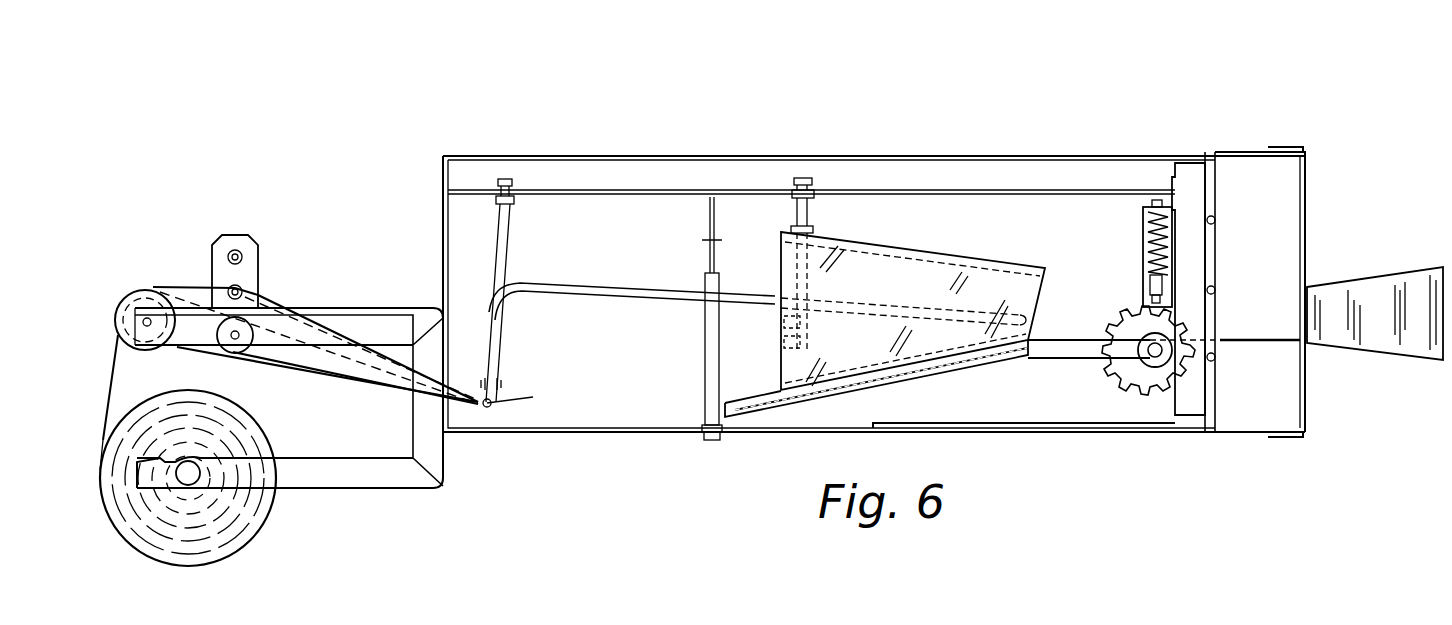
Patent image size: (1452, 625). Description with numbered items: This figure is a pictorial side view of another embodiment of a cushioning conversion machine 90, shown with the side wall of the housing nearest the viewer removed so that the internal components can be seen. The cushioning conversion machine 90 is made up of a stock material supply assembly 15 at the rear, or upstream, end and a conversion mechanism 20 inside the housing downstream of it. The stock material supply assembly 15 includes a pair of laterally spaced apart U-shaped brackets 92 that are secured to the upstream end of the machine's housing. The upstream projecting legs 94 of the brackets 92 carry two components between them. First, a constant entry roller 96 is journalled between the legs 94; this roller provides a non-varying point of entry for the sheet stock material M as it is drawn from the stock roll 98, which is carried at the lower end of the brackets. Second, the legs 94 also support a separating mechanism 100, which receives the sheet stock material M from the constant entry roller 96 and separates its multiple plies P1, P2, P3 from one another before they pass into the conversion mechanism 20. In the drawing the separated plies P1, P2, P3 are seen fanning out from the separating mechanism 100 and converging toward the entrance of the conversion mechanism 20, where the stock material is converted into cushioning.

The stock material supply assembly 15 is at (345, 238).
The conversion mechanism 20 is at (618, 232).
The cushioning conversion machine 90 is at (1268, 130).
The U-shaped bracket 92 is at (450, 478).
The upstream projecting leg 94 is at (391, 490).
The constant entry roller 96 is at (140, 297).
The stock roll 98 is at (206, 550).
The separating mechanism 100 is at (207, 242).
The ply P1 is at (320, 372).
The ply P2 is at (367, 365).
The ply P3 is at (393, 360).
The sheet stock material M is at (112, 374).